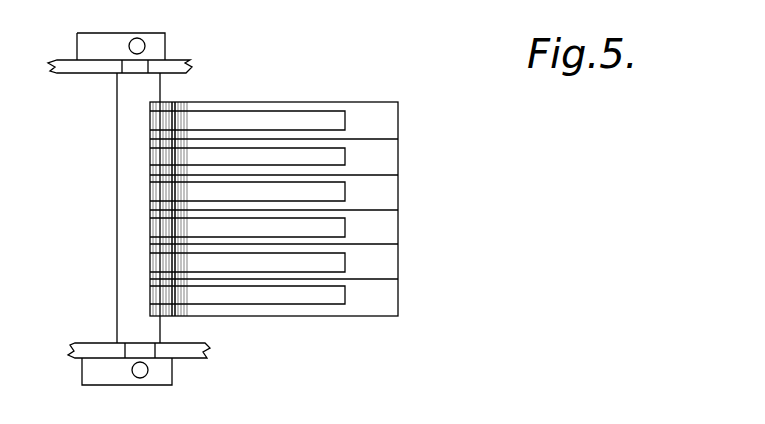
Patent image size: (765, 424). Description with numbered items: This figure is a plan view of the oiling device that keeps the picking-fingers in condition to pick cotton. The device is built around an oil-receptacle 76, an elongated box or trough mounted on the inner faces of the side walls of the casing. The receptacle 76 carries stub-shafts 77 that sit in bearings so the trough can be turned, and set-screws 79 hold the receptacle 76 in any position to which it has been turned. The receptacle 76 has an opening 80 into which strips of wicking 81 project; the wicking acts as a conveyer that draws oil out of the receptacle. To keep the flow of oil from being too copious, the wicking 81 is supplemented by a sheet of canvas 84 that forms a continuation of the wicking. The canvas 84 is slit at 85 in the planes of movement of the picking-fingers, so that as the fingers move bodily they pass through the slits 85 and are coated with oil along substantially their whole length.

The oil-receptacle 76 is at (125, 247).
The stub-shafts 77 is at (163, 55).
The set-screws 79 is at (137, 38).
The opening 80 is at (153, 100).
The strips of wicking 81 is at (287, 118).
The sheet of canvas 84 is at (383, 310).
The slits 85 is at (398, 139).